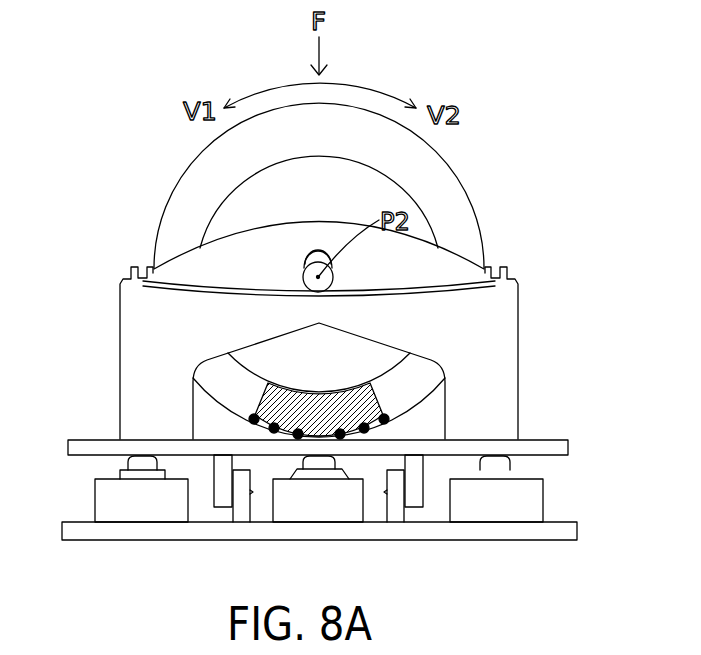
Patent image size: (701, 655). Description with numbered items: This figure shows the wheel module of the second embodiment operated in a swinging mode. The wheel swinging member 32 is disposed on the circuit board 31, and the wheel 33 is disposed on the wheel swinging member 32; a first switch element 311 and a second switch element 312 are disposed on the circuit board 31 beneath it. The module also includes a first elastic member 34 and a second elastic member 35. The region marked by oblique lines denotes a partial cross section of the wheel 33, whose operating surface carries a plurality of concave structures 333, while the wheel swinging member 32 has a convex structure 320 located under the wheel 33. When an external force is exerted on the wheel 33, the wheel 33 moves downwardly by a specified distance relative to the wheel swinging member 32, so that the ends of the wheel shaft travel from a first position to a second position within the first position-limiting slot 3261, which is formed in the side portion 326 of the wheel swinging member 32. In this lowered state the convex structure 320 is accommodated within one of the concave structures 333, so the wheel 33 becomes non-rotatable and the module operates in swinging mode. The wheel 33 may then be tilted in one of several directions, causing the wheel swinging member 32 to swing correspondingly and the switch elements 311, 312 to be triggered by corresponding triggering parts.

The circuit board 31 is at (127, 533).
The first switch element 311 is at (107, 510).
The second switch element 312 is at (530, 508).
The wheel swinging member 32 is at (111, 353).
The convex structure 320 is at (293, 437).
The side wall 326 is at (505, 382).
The first position-limiting slot 3261 is at (305, 250).
The wheel 33 is at (430, 189).
The concave structures 333 is at (322, 408).
The first elastic member 34 is at (183, 283).
The second elastic member 35 is at (347, 505).